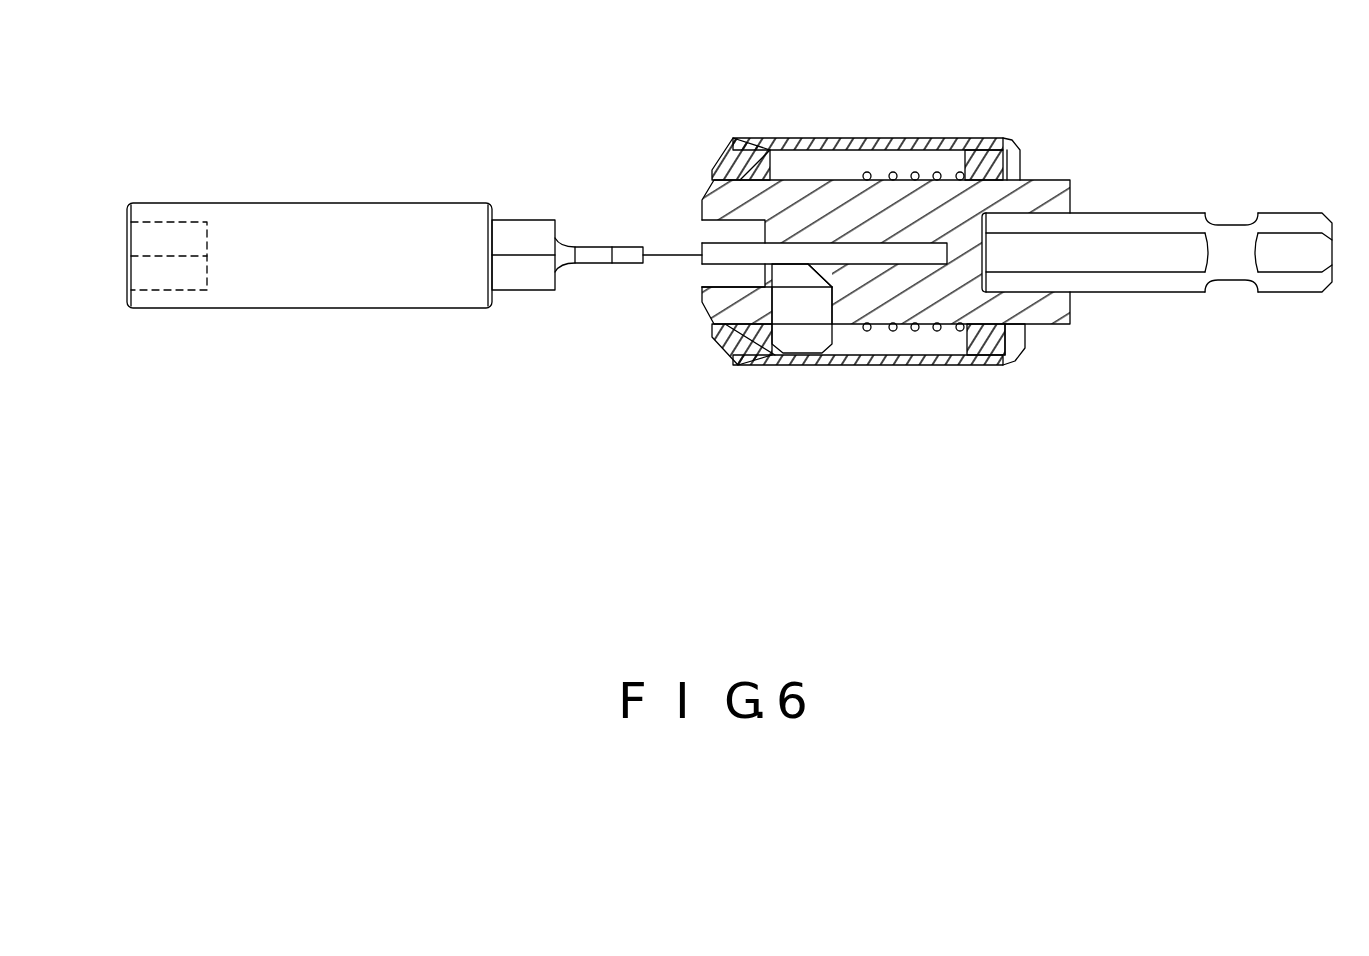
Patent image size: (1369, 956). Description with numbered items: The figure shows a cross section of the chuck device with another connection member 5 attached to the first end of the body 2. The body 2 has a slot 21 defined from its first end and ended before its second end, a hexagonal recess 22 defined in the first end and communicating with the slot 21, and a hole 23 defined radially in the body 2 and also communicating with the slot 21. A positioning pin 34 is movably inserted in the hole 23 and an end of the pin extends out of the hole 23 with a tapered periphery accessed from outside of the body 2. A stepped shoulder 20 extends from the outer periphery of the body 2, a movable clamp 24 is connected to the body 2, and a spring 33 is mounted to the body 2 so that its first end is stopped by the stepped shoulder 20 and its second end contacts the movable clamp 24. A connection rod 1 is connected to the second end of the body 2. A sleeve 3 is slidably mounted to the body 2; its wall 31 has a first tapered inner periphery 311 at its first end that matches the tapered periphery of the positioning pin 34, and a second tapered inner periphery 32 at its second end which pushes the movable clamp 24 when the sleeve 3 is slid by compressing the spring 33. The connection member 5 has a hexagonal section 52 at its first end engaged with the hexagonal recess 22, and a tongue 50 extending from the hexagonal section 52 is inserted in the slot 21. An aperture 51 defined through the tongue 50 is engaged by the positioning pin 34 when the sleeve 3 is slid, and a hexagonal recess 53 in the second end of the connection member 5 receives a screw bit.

The connection rod 1 is at (1147, 233).
The body 2 is at (879, 274).
The sleeve 3 is at (868, 255).
The connection member 5 is at (283, 238).
The stepped shoulder 20 is at (853, 317).
The slot 21 is at (777, 258).
The hexagonal recess 22 is at (715, 228).
The hole 23 is at (827, 268).
The movable clamp 24 is at (995, 152).
The sleeve wall 31 is at (805, 148).
The first tapered inner periphery 311 is at (743, 137).
The second tapered inner periphery 32 is at (1017, 352).
The spring 33 is at (915, 176).
The positioning pin 34 is at (821, 256).
The tongue 50 is at (594, 268).
The aperture 51 is at (597, 257).
The hexagonal section 52 is at (522, 230).
The hexagonal recess 53 is at (165, 218).